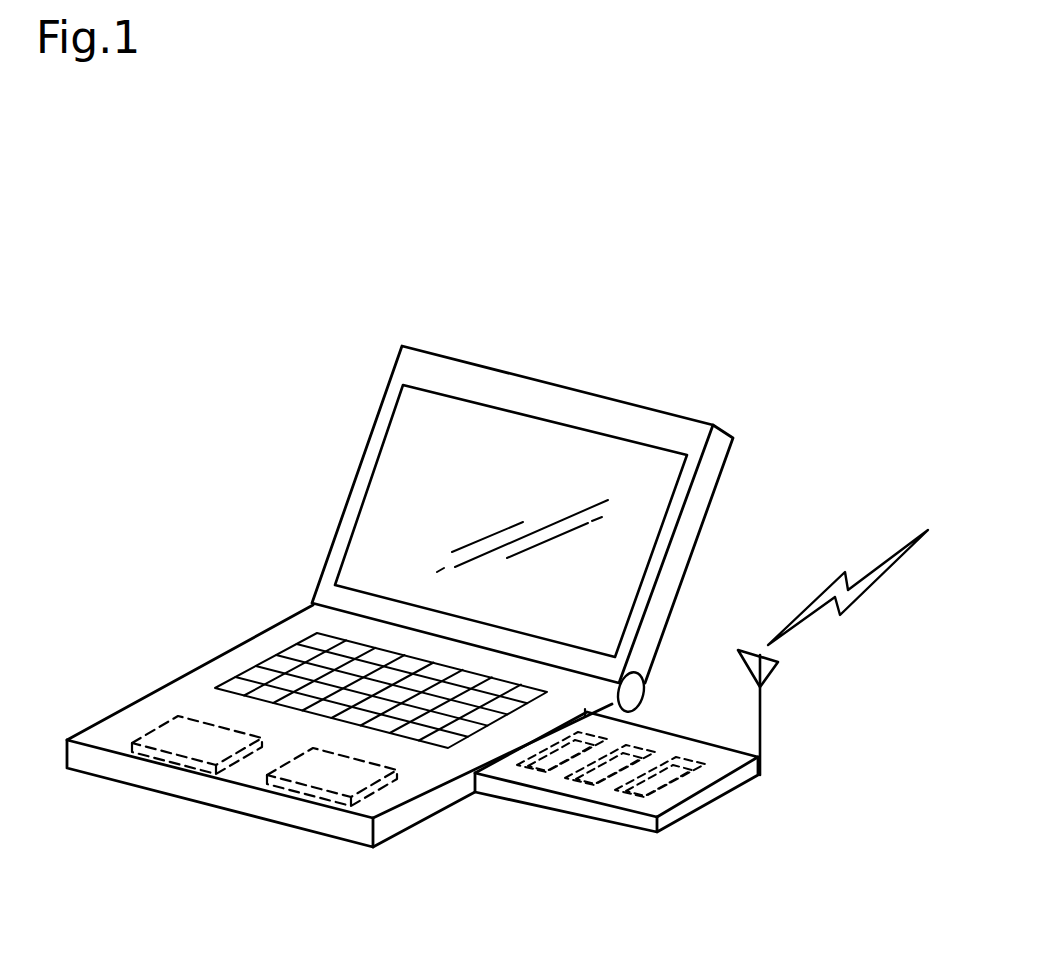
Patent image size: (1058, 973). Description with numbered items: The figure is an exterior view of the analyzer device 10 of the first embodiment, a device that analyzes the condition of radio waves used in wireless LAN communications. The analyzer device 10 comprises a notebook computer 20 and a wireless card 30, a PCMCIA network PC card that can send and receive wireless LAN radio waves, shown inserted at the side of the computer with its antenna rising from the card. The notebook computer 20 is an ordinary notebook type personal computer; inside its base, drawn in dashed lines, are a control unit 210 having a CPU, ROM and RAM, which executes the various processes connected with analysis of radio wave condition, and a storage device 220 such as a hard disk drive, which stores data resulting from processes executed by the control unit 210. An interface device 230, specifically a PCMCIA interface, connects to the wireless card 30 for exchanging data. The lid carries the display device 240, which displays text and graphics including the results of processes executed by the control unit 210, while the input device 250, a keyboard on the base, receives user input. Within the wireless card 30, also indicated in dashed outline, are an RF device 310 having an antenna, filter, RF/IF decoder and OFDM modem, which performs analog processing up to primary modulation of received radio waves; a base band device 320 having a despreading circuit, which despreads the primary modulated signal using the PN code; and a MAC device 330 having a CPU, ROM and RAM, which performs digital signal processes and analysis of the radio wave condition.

The analyzer device 10 is at (748, 315).
The notebook computer 20 is at (345, 846).
The wireless card 30 is at (706, 795).
The control unit 210 is at (188, 738).
The storage device 220 is at (323, 772).
The interface device 230 is at (608, 730).
The display device 240 is at (397, 477).
The input device 250 is at (296, 657).
The RF device 310 is at (627, 793).
The base band device 320 is at (577, 783).
The MAC device 330 is at (528, 767).